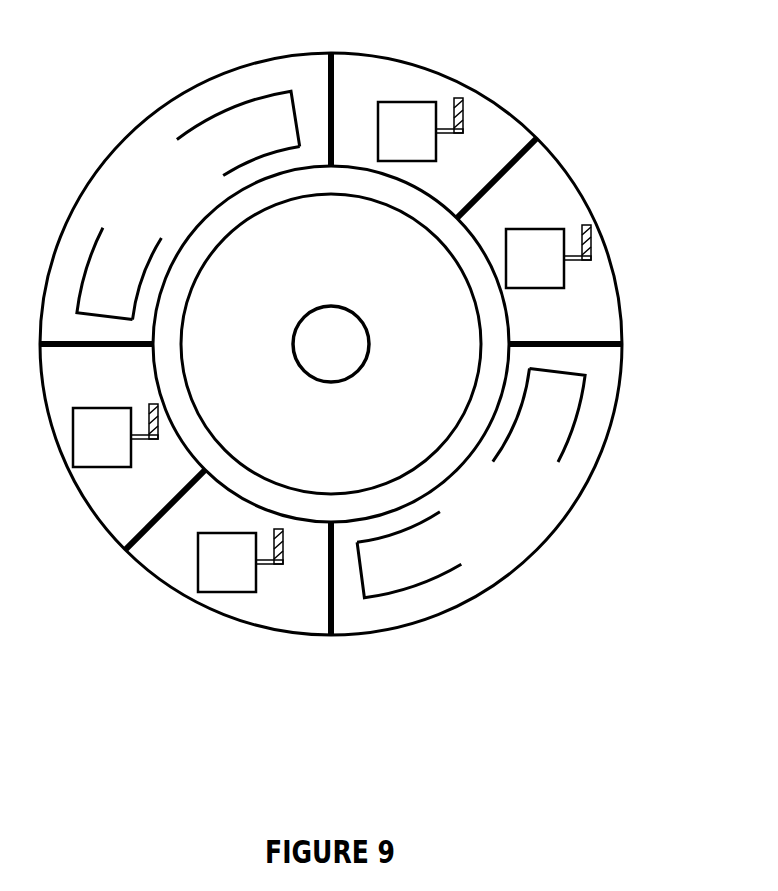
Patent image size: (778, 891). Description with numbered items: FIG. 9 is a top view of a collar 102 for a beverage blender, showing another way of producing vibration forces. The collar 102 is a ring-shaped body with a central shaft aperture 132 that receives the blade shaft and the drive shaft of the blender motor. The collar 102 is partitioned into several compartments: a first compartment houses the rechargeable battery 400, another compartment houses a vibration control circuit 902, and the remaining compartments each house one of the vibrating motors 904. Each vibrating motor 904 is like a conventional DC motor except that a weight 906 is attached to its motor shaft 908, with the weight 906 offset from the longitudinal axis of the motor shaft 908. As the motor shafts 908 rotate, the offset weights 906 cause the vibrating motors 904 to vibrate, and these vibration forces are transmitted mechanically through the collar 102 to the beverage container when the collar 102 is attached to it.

The collar 102 is at (595, 583).
The shaft aperture 132 is at (362, 312).
The rechargeable battery 400 is at (225, 141).
The vibration control circuit 902 is at (522, 440).
The vibrating motor 904 is at (326, 348).
The weight 906 is at (370, 343).
The motor shaft 908 is at (361, 380).